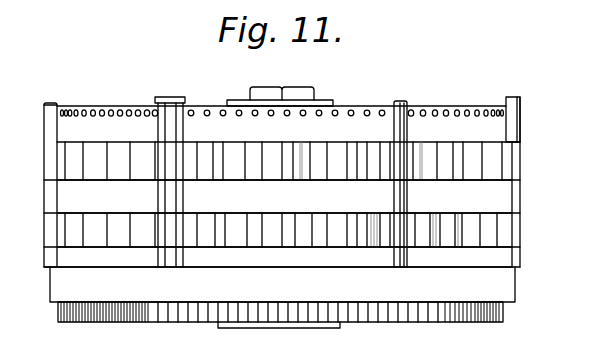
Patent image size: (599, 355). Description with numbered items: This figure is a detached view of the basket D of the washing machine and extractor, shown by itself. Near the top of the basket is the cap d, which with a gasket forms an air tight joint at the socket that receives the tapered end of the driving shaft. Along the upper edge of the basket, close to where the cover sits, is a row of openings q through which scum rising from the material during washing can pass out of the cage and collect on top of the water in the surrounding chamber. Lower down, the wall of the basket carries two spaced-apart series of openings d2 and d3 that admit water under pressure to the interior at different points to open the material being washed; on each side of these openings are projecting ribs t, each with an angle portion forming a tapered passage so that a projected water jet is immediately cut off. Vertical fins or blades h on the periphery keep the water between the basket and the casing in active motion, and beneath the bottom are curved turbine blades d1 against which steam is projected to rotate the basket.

The basket D is at (268, 199).
The vertical fins or blades h is at (53, 104).
The openings q is at (81, 110).
The cap d is at (312, 101).
The projecting ribs t is at (58, 161).
The openings d2 is at (526, 167).
The openings d3 is at (322, 240).
The turbine blades d1 is at (505, 310).